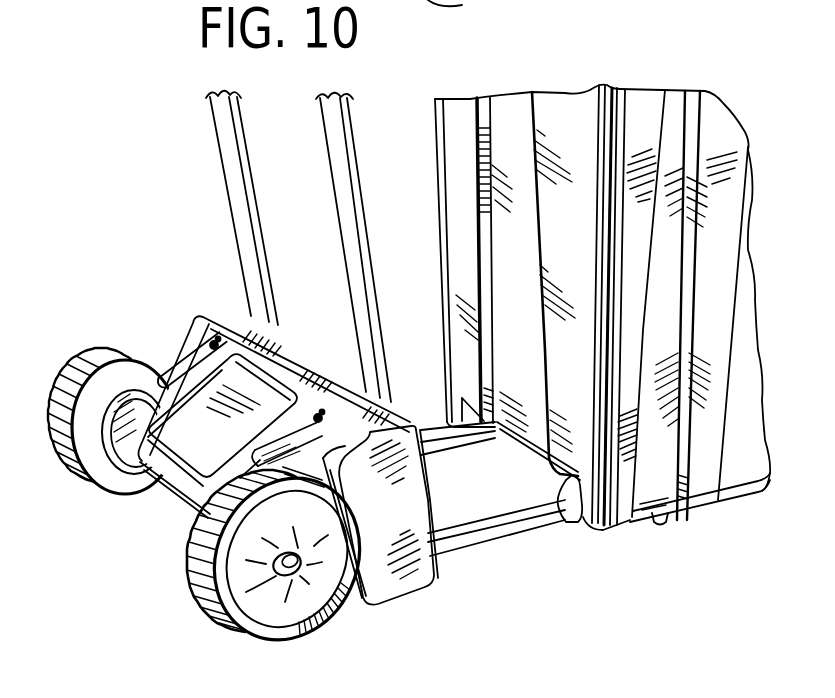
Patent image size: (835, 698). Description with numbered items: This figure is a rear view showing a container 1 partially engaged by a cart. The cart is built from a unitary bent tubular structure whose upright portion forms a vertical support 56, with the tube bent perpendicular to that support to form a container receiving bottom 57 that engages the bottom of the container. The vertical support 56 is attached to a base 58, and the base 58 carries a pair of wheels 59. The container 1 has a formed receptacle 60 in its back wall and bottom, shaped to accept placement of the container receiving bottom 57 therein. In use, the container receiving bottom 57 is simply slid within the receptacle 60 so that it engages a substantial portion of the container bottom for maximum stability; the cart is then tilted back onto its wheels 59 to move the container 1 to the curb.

The container 1 is at (658, 524).
The vertical support 56 is at (238, 204).
The container receiving bottom 57 is at (472, 542).
The base 58 is at (430, 505).
The wheels 59 is at (113, 470).
The formed receptacle 60 is at (562, 505).